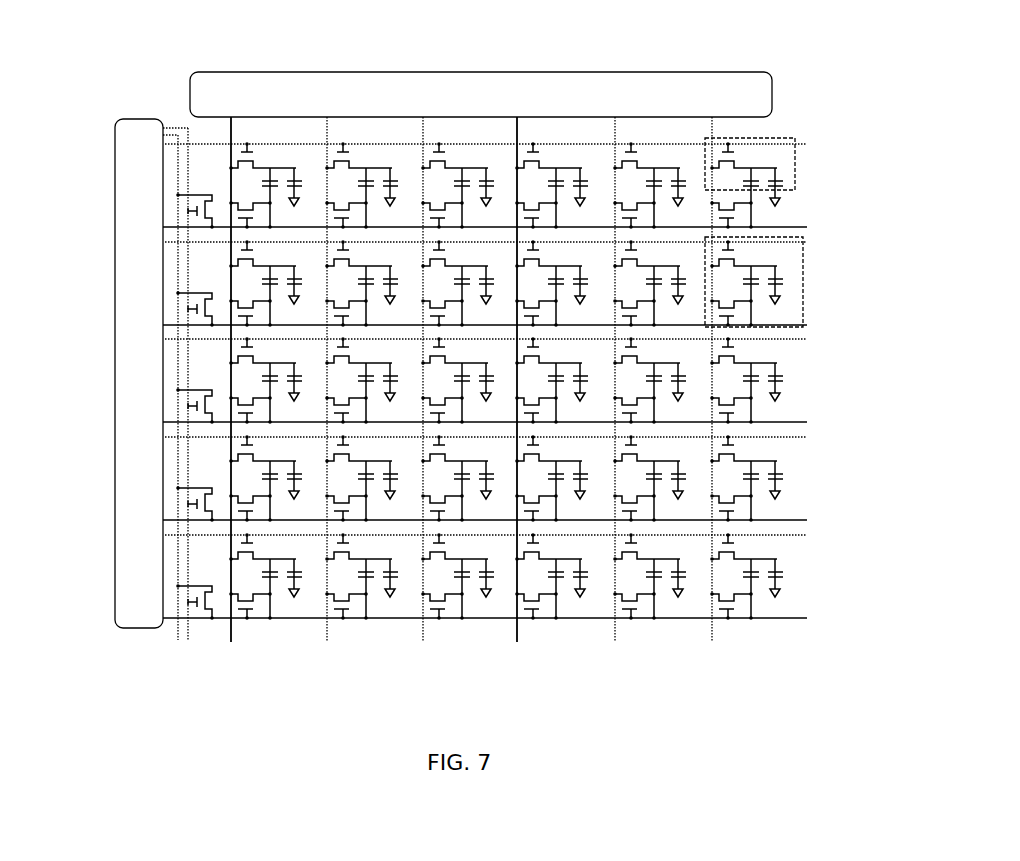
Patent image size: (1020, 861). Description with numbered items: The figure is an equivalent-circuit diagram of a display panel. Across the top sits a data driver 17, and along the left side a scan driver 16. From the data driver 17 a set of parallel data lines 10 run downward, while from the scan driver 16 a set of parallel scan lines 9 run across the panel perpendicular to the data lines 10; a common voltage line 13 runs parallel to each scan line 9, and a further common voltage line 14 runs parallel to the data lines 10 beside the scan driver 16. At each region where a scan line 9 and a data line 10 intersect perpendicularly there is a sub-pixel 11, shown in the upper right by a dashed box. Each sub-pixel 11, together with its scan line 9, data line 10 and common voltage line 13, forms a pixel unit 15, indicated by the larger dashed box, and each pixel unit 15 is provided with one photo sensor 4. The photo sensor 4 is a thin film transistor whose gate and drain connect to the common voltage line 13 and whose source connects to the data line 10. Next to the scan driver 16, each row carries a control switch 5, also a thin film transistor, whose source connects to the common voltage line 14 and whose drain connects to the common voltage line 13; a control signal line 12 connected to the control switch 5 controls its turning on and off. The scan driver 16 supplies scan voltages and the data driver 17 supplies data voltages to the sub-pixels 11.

The data driver 17 is at (528, 72).
The scan driver 16 is at (114, 308).
The sub-pixel 11 is at (795, 163).
The pixel unit 15 is at (803, 292).
The scan line 9 is at (787, 339).
The common voltage line 13 is at (807, 422).
The common voltage line 14 is at (178, 640).
The control signal line 12 is at (188, 640).
The control switch 5 is at (215, 618).
The photo sensor 4 is at (438, 618).
The data line 10 is at (617, 633).